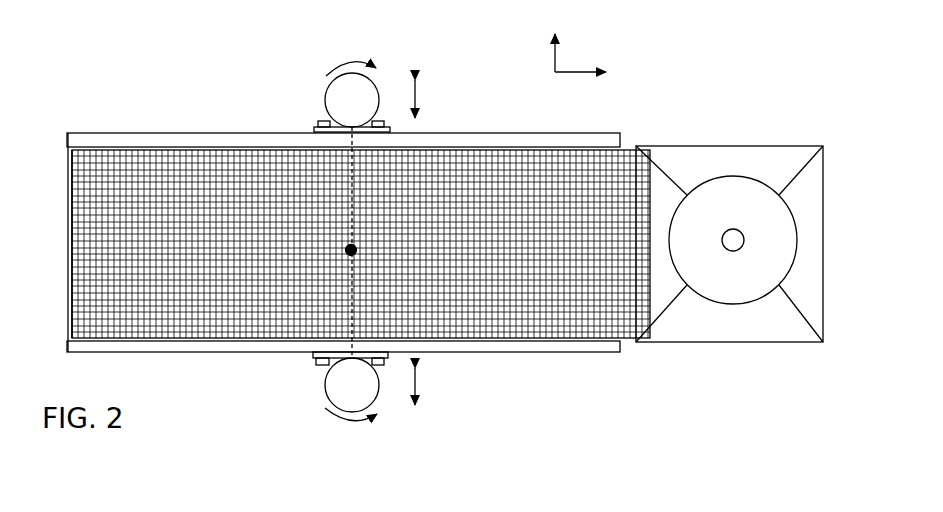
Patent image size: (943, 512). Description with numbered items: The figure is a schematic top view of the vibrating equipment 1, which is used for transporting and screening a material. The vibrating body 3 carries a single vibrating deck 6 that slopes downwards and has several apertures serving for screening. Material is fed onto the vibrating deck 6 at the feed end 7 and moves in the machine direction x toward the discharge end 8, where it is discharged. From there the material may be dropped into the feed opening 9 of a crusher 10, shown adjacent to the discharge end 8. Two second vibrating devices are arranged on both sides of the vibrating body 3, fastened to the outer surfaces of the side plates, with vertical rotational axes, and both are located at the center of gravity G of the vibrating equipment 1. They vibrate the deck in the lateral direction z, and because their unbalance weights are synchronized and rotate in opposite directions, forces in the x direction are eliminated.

The vibrating equipment 1 is at (115, 64).
The vibrating body 3 is at (70, 151).
The vibrating deck 6 is at (208, 172).
The feed end 7 is at (72, 104).
The discharge end 8 is at (682, 60).
The feed opening 9 is at (705, 163).
The crusher 10 is at (767, 404).
The center of gravity G is at (345, 252).